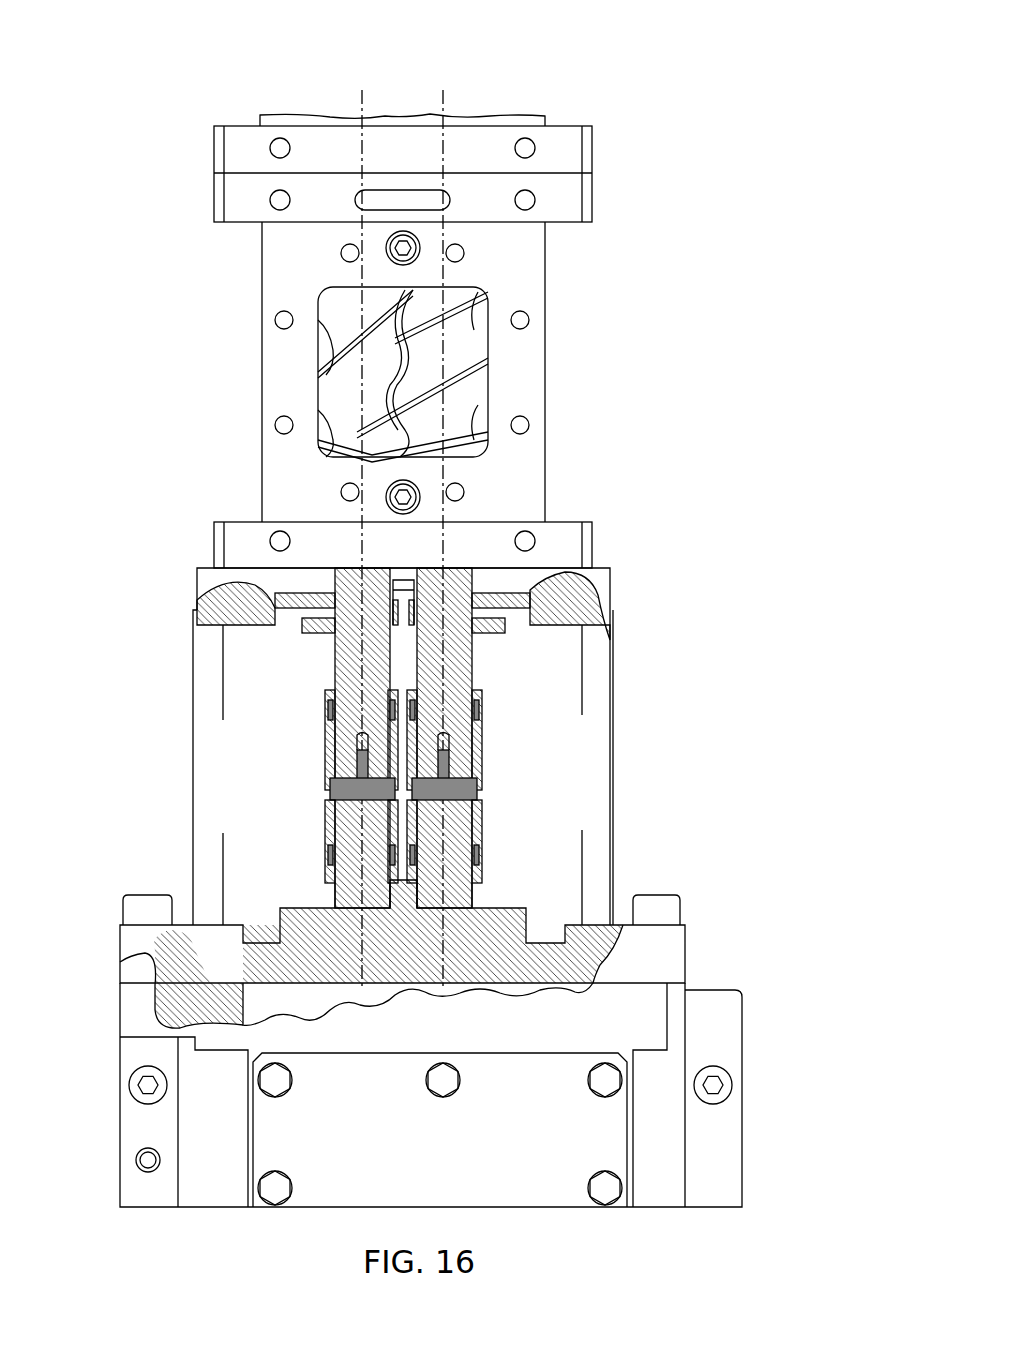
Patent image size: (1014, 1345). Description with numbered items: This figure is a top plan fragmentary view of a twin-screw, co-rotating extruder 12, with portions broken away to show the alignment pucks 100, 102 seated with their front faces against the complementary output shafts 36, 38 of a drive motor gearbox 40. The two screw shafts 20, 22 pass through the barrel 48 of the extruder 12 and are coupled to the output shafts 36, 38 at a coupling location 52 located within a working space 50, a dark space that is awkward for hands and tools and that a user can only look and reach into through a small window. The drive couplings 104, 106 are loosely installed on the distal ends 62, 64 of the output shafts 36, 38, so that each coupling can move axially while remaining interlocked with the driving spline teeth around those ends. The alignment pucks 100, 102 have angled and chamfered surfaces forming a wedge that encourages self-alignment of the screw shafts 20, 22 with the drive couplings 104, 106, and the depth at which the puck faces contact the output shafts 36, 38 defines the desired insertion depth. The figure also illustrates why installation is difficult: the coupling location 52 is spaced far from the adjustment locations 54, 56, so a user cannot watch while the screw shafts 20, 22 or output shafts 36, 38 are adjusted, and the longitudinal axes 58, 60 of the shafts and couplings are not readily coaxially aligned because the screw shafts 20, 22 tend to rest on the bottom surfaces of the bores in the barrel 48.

The extruder 12 is at (120, 75).
The adjustment location 54 is at (527, 93).
The barrel 48 is at (402, 118).
The longitudinal axis 60 is at (362, 115).
The longitudinal axis 58 is at (443, 118).
The working space 50 is at (183, 765).
The coupling location 52 is at (510, 745).
The screw shaft 22 is at (336, 652).
The screw shaft 20 is at (472, 652).
The drive coupling 106 is at (328, 752).
The drive coupling 104 is at (482, 752).
The alignment puck 102 is at (336, 783).
The alignment puck 100 is at (473, 783).
The distal end 64 is at (337, 812).
The distal end 62 is at (470, 812).
The output shaft 38 is at (336, 893).
The output shaft 36 is at (472, 893).
The drive motor gearbox 40 is at (120, 962).
The adjustment location 56 is at (545, 1215).